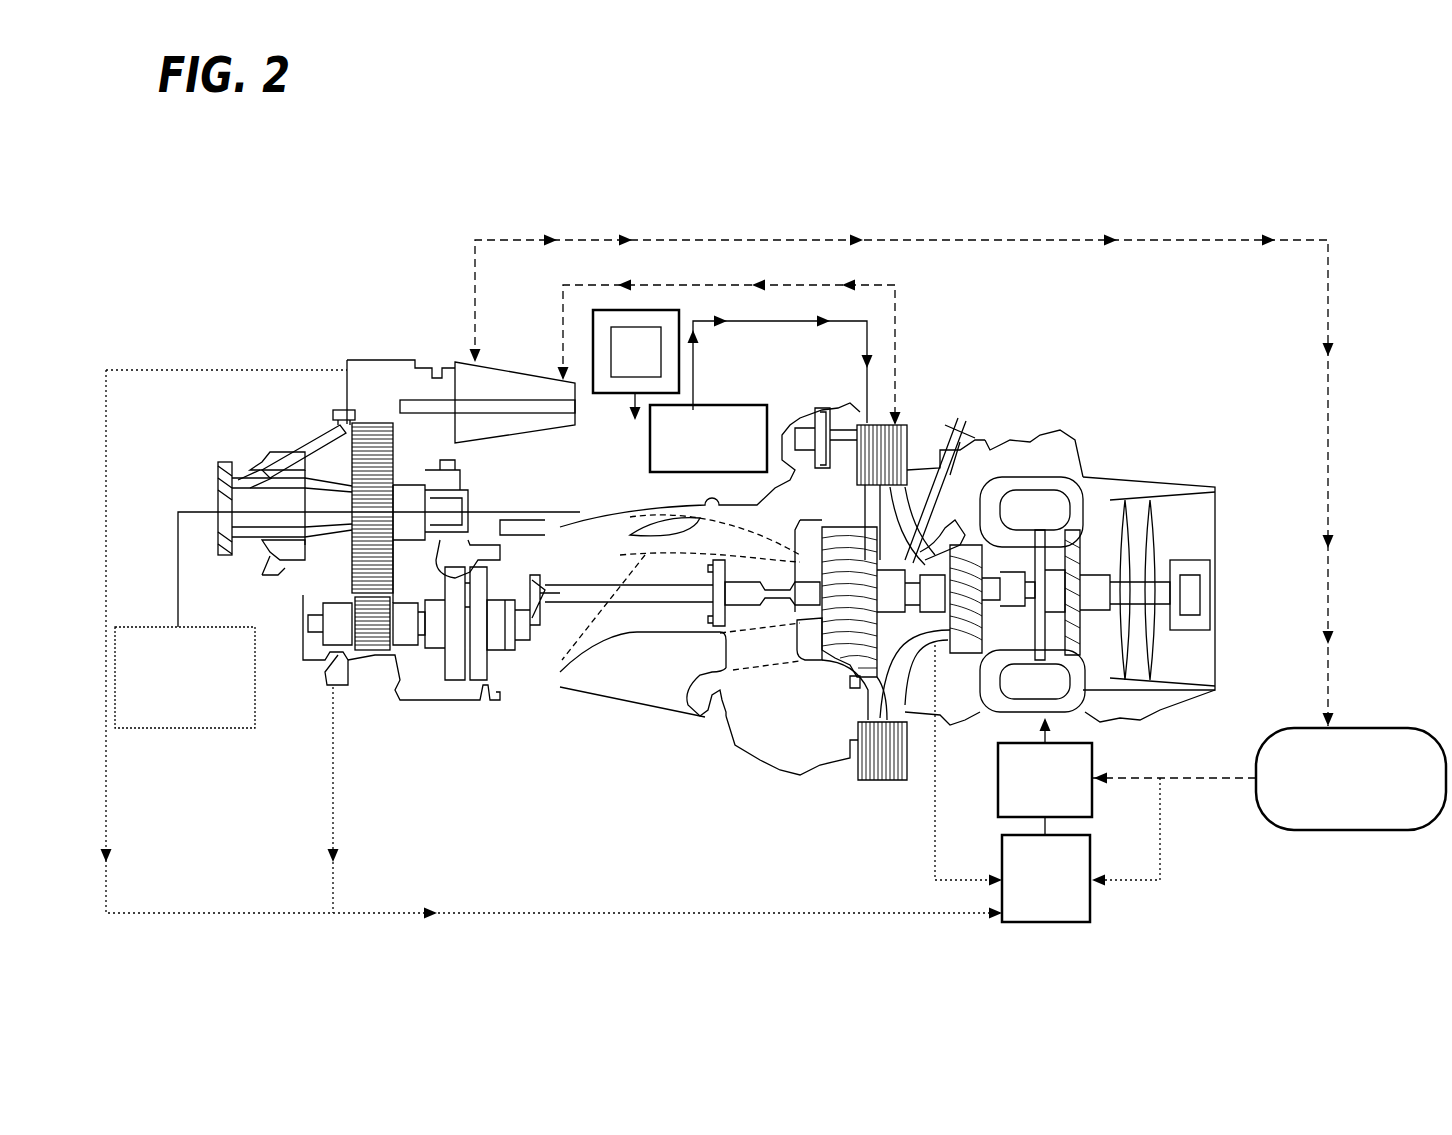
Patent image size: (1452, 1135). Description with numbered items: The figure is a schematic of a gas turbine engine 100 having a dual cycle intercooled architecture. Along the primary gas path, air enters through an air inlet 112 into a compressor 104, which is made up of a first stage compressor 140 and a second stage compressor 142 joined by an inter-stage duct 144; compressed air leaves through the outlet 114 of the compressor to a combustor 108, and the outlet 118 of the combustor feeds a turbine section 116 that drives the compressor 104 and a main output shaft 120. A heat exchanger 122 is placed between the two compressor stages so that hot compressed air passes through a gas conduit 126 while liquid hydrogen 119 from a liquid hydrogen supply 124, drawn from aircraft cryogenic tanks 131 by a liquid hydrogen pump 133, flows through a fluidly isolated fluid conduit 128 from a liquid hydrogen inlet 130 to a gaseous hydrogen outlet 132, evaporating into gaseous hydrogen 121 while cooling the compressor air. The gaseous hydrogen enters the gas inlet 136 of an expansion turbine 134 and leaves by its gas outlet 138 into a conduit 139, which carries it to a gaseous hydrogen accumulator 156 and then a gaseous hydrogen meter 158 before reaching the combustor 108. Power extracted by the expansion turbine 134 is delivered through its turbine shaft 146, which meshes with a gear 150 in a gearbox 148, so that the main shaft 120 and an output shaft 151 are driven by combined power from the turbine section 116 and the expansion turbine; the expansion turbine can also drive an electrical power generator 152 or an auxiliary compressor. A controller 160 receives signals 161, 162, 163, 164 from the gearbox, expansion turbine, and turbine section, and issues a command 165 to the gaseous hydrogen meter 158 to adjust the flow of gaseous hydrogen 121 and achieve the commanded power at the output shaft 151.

The engine 100 is at (485, 193).
The compressor 104 is at (900, 655).
The combustor 108 is at (1160, 710).
The air inlet 112 is at (778, 540).
The outlet of the compressor 114 is at (1200, 520).
The turbine section 116 is at (1155, 690).
The outlet of the combustor 118 is at (1010, 712).
The liquid hydrogen 119 is at (693, 352).
The main output shaft 120 is at (578, 600).
The gaseous hydrogen 121 is at (668, 240).
The heat exchanger 122 is at (880, 410).
The liquid hydrogen supply 124 is at (636, 365).
The gas conduit 126 is at (945, 420).
The fluid conduit 128 is at (830, 410).
The liquid hydrogen inlet 130 is at (648, 440).
The aircraft cryogenic tanks 131 is at (678, 310).
The gaseous hydrogen outlet 132 is at (895, 435).
The liquid hydrogen pump 133 is at (708, 438).
The expansion turbine 134 is at (487, 366).
The gas inlet 136 is at (563, 355).
The gas outlet 138 is at (468, 356).
The conduit 139 is at (1342, 245).
The first stage compressor 140 is at (835, 625).
The second stage compressor 142 is at (965, 470).
The inter-stage duct 144 is at (930, 495).
The turbine shaft 146 is at (458, 412).
The gearbox 148 is at (318, 415).
The gear 150 is at (372, 418).
The output shaft 151 is at (250, 520).
The electrical power generator 152 is at (155, 728).
The gaseous hydrogen accumulator 156 is at (1292, 728).
The gaseous hydrogen meter 158 is at (998, 785).
The controller 160 is at (1046, 878).
The signal 161 is at (1160, 835).
The signal 162 is at (933, 855).
The signal 163 is at (405, 913).
The signal 164 is at (242, 913).
The command 165 is at (1047, 825).